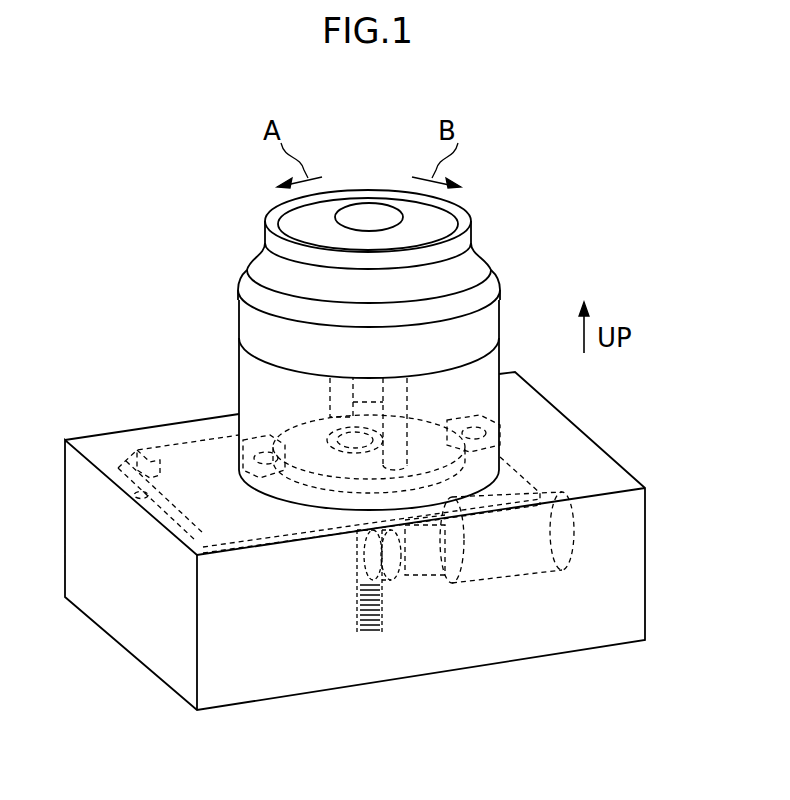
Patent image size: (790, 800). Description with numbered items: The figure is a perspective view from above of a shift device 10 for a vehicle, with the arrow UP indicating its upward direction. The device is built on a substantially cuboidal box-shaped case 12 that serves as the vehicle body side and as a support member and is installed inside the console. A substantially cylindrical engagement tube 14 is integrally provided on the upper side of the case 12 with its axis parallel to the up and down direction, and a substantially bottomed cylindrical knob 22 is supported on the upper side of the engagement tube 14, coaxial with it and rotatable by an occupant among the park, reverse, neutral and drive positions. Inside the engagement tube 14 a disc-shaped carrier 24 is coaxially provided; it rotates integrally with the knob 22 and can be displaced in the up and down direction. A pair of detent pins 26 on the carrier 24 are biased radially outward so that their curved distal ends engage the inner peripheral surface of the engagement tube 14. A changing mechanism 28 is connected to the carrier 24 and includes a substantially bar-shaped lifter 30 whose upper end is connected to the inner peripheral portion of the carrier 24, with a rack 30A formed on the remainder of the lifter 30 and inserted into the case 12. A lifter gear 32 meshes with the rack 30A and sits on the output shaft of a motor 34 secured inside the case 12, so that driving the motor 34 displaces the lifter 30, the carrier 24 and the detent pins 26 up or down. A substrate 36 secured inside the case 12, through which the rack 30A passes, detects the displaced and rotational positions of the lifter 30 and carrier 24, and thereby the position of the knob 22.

The shift device 10 is at (131, 266).
The case 12 is at (83, 438).
The engagement tube 14 is at (239, 346).
The knob 22 is at (265, 222).
The carrier 24 is at (285, 417).
The detent pins 26 is at (240, 467).
The changing mechanism 28 is at (463, 603).
The lifter 30 is at (357, 580).
The rack 30A is at (357, 616).
The lifter gear 32 is at (388, 582).
The motor 34 is at (573, 545).
The substrate 36 is at (157, 447).